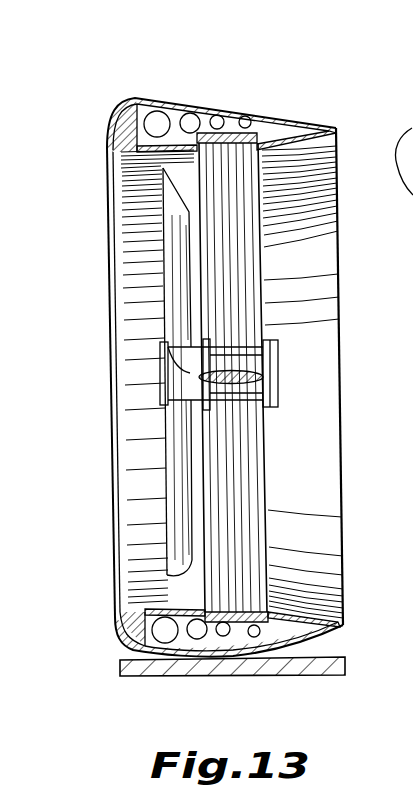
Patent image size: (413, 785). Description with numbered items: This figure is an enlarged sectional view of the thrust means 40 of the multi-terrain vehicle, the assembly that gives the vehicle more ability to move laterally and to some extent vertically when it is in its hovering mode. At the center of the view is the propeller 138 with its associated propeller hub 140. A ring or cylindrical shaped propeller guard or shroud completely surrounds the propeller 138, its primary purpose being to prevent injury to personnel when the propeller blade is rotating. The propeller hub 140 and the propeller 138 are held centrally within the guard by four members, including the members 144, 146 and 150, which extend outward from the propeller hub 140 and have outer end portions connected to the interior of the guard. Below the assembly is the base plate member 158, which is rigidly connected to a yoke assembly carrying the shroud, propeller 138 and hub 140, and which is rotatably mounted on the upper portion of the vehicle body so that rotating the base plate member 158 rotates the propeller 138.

The thrust means 40 is at (230, 100).
The member 146 is at (262, 257).
The propeller 138 is at (163, 437).
The propeller hub 140 is at (280, 369).
The member 144 is at (230, 385).
The member 150 is at (268, 508).
The base plate member 158 is at (280, 676).